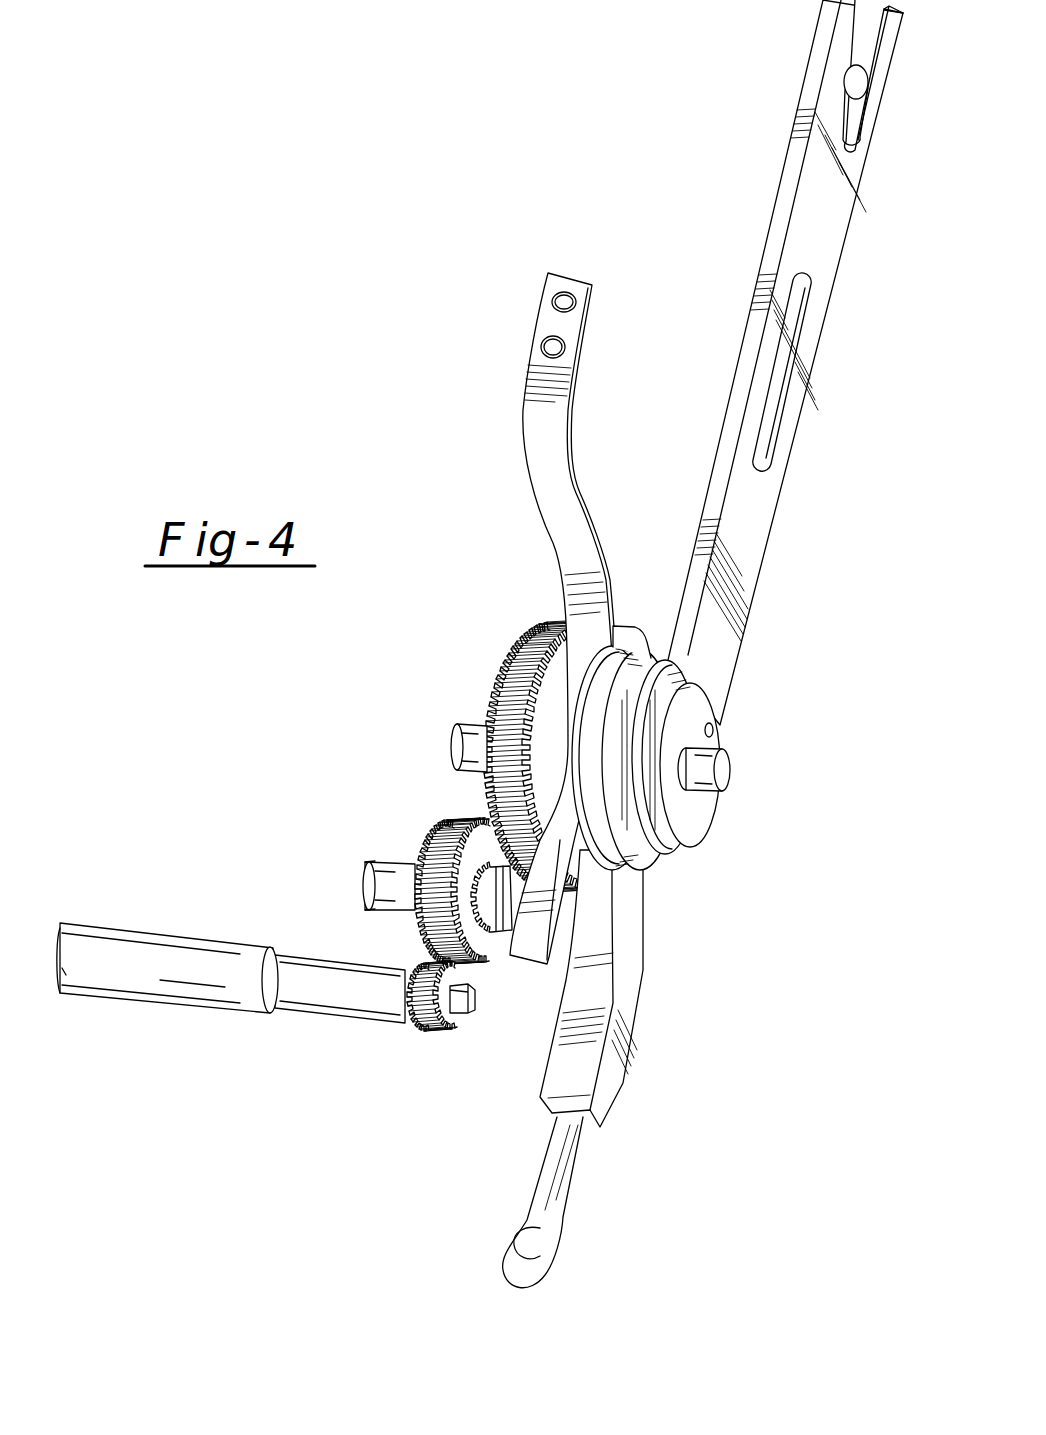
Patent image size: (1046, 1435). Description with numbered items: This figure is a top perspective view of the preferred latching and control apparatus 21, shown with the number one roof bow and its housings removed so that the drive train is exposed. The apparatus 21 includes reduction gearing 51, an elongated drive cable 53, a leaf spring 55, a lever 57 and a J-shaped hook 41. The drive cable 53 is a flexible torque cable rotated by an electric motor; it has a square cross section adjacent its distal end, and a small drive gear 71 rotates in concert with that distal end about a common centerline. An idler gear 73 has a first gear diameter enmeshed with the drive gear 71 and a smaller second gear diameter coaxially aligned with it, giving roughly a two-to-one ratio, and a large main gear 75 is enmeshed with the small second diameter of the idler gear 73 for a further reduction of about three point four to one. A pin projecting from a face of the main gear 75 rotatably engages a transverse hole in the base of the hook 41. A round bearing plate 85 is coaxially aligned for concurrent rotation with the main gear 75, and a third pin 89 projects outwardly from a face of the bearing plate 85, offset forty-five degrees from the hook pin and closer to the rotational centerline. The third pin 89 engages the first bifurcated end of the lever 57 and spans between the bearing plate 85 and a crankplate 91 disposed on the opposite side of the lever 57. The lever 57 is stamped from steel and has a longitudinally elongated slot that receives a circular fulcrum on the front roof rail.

The latching and control apparatus 21 is at (671, 934).
The hook 41 is at (557, 1185).
The reduction gearing 51 is at (302, 763).
The drive cable 53 is at (298, 960).
The leaf spring 55 is at (525, 412).
The lever 57 is at (817, 192).
The drive gear 71 is at (437, 1032).
The idler gear 73 is at (433, 832).
The main gear 75 is at (513, 665).
The bearing plate 85 is at (647, 875).
The third pin 89 is at (715, 745).
The crankplate 91 is at (705, 818).